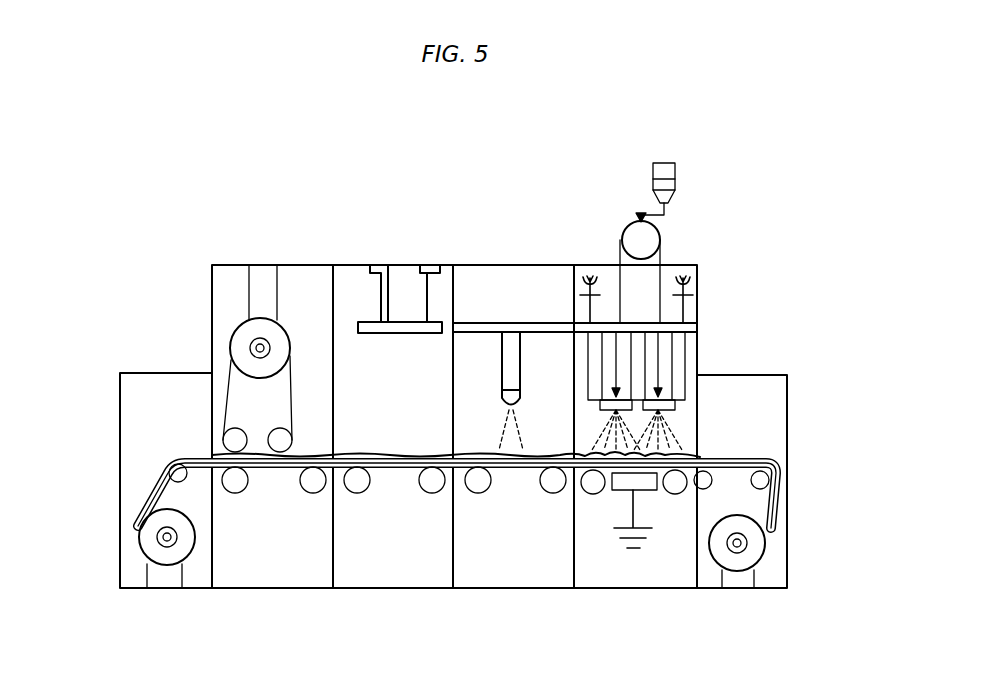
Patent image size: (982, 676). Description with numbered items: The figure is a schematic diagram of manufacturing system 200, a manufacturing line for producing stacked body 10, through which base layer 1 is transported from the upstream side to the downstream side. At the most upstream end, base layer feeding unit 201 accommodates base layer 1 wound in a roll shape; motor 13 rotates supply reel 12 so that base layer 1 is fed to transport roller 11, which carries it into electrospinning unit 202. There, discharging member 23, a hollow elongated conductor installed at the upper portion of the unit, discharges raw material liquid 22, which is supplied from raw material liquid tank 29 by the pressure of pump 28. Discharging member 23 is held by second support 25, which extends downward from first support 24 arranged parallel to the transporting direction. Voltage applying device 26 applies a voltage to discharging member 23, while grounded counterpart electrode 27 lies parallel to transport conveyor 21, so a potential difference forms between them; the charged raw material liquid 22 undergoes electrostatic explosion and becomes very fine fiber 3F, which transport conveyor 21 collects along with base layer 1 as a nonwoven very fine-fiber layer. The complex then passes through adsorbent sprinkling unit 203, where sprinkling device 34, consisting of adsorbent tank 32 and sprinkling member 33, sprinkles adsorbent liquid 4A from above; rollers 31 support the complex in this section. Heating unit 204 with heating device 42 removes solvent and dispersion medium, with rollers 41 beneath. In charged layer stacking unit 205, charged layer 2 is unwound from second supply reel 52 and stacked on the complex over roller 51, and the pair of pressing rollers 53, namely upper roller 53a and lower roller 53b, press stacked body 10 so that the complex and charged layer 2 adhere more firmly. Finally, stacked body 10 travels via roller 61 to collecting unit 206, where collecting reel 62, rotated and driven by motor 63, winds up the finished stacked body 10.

The base layer 1 is at (453, 499).
The stacked body 10 is at (152, 492).
The transport roller 11 is at (713, 463).
The supply reel 12 is at (752, 545).
The motor 13 is at (745, 580).
The charged layer 2 is at (297, 380).
The transport conveyor 21 is at (612, 495).
The raw material liquid 22 is at (672, 186).
The discharging member 23 is at (678, 405).
The first support 24 is at (699, 328).
The second support 25 is at (684, 362).
The voltage applying device 26 is at (685, 300).
The counterpart electrode 27 is at (652, 493).
The pump 28 is at (656, 235).
The raw material liquid tank 29 is at (660, 162).
The very fine fiber 3F is at (662, 430).
The support rollers 31 is at (548, 490).
The adsorbent tank 32 is at (512, 342).
The sprinkling member 33 is at (521, 396).
The sprinkling device 34 is at (472, 212).
The adsorbent liquid 4A is at (500, 436).
The support rollers 41 is at (428, 490).
The heating device 42 is at (370, 318).
The support roller 51 is at (313, 487).
The second supply reel 52 is at (250, 330).
The pair of pressing rollers 53 is at (134, 293).
The pressing roller 53a is at (233, 430).
The pressing roller 53b is at (233, 470).
The roller 61 is at (173, 460).
The collecting reel 62 is at (148, 524).
The motor 63 is at (160, 575).
The manufacturing system 200 is at (214, 230).
The base layer feeding unit 201 is at (787, 597).
The electrospinning unit 202 is at (695, 610).
The adsorbent sprinkling unit 203 is at (455, 610).
The heating unit 204 is at (334, 610).
The charged layer stacking unit 205 is at (331, 610).
The collecting unit 206 is at (208, 597).